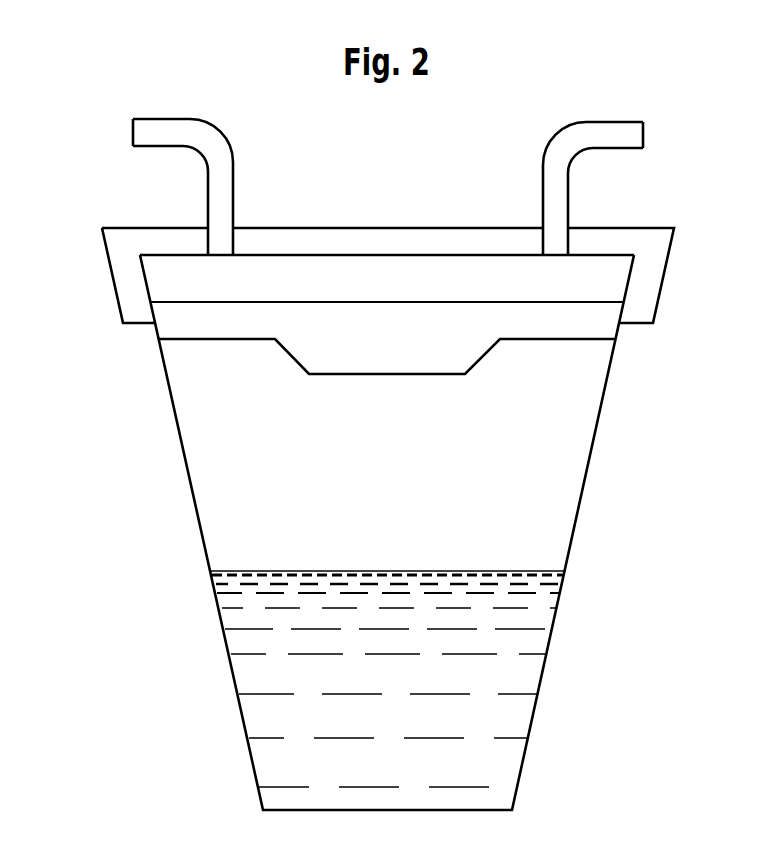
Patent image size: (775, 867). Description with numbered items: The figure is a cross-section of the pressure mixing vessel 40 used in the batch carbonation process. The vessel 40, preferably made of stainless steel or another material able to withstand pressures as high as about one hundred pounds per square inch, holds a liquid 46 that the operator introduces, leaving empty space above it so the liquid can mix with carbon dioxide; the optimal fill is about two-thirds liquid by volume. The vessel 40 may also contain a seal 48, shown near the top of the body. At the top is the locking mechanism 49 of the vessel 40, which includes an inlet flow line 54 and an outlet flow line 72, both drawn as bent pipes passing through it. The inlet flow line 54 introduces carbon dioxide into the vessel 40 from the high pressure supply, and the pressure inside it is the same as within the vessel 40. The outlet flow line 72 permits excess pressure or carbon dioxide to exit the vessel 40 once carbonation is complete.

The vessel 40 is at (602, 497).
The liquid 46 is at (523, 679).
The seal 48 is at (572, 348).
The locking mechanism 49 is at (656, 247).
The inlet flow line 54 is at (173, 124).
The outlet flow line 72 is at (598, 129).